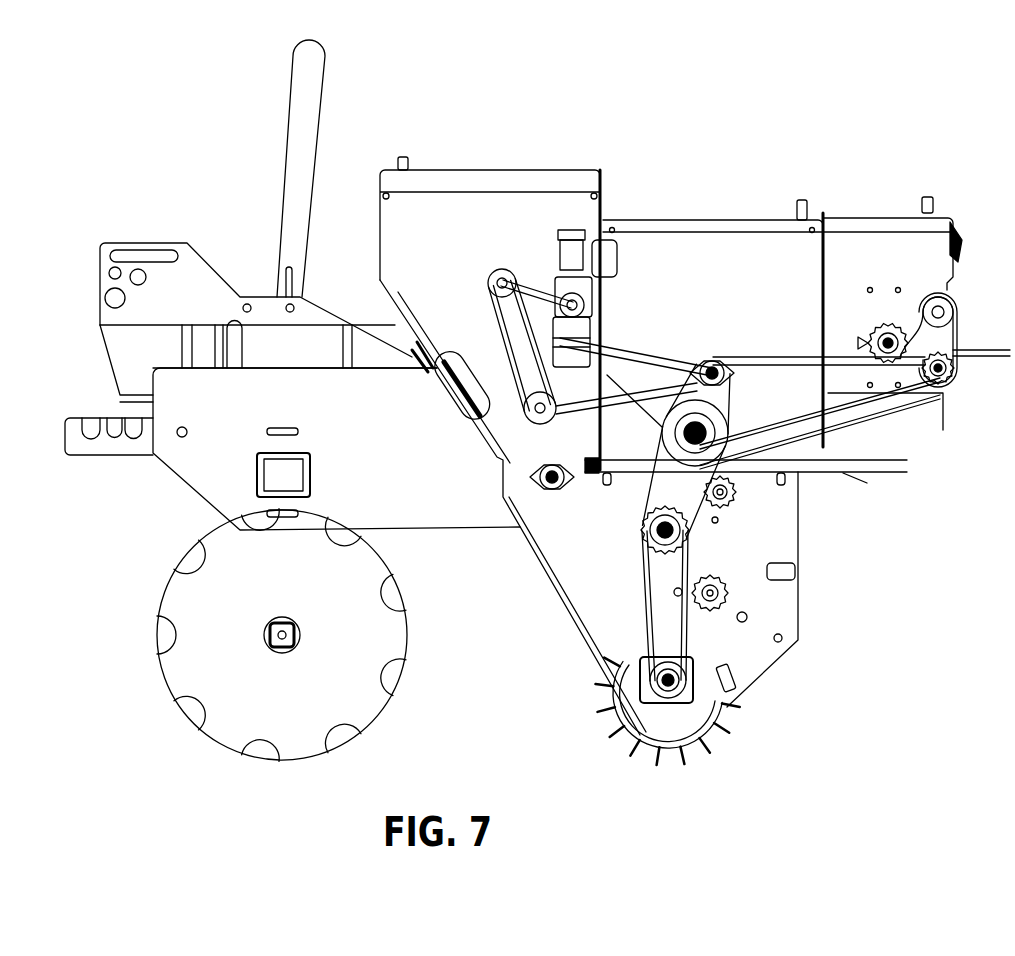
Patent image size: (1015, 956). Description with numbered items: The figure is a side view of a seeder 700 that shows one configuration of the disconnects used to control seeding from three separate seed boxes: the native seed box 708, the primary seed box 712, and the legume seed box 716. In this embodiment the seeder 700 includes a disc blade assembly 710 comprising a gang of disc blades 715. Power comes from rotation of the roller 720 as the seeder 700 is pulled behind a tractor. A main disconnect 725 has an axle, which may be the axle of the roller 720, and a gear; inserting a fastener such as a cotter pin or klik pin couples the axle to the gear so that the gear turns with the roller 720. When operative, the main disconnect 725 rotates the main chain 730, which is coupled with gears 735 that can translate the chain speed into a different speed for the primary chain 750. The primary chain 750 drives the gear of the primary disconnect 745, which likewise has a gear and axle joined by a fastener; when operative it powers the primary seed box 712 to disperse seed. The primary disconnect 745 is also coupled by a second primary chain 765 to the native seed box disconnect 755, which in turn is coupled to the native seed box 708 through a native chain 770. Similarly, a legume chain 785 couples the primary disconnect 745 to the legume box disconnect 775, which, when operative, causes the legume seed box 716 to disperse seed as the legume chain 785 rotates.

The seeder 700 is at (395, 62).
The native seed box 708 is at (498, 192).
The disc blade assembly 710 is at (440, 695).
The primary seed box 712 is at (757, 242).
The disc blades 715 is at (200, 730).
The legume seed box 716 is at (895, 242).
The roller 720 is at (650, 722).
The main disconnect 725 is at (700, 687).
The main chain 730 is at (640, 588).
The gears 735 is at (632, 540).
The primary disconnect 745 is at (598, 437).
The primary chain 750 is at (723, 515).
The native seed box disconnect 755 is at (705, 360).
The second primary chain 765 is at (716, 394).
The native chain 770 is at (507, 380).
The legume box disconnect 775 is at (883, 340).
The legume chain 785 is at (790, 360).